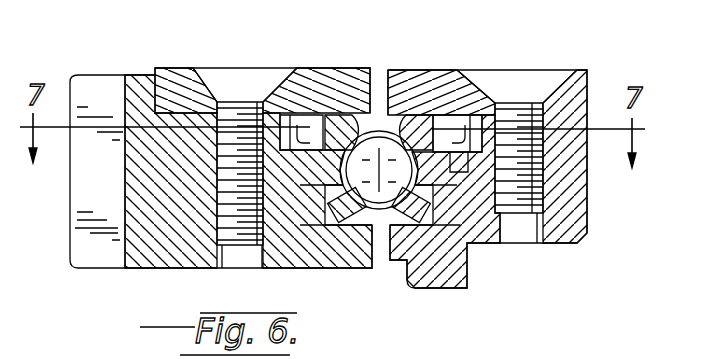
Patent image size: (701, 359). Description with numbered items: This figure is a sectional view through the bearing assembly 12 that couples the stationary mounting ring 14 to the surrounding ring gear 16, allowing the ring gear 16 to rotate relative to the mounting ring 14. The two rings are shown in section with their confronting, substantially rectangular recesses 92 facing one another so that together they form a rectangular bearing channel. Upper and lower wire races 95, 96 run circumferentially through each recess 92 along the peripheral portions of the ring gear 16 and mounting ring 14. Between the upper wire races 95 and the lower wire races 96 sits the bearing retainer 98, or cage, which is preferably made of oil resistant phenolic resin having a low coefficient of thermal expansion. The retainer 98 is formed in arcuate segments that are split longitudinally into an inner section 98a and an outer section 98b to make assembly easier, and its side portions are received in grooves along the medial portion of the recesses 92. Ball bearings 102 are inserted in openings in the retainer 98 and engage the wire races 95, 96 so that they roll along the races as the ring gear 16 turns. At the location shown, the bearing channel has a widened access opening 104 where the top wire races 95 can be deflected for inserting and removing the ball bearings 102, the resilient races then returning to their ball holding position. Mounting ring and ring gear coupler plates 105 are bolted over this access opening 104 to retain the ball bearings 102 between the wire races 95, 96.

The bearing assembly 12 is at (230, 205).
The mounting ring 14 is at (170, 260).
The ring gear 16 is at (480, 222).
The recesses 92 is at (352, 214).
The upper wire races 95 is at (322, 152).
The lower wire races 96 is at (345, 215).
The bearing retainer 98 is at (457, 173).
The inner section 98a is at (310, 157).
The outer section 98b is at (475, 118).
The ball bearings 102 is at (383, 133).
The access opening 104 is at (265, 157).
The coupler plates 105 is at (177, 77).